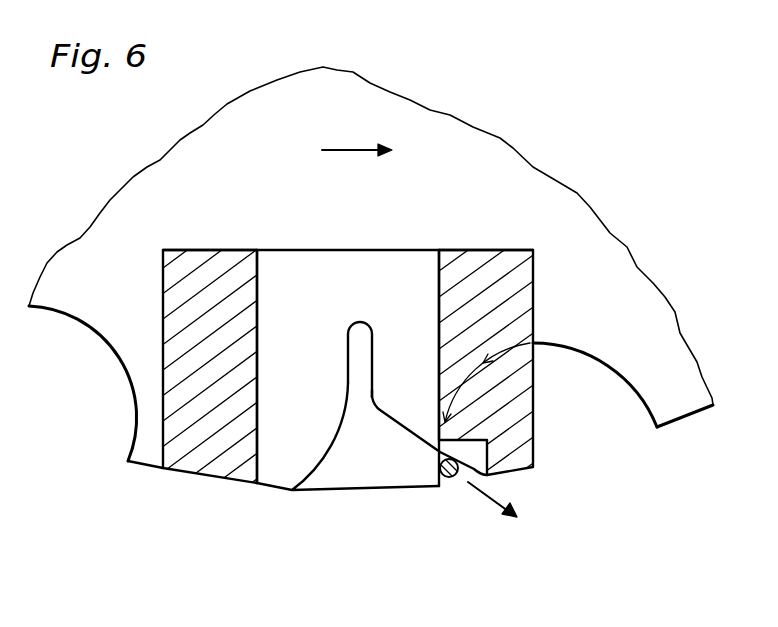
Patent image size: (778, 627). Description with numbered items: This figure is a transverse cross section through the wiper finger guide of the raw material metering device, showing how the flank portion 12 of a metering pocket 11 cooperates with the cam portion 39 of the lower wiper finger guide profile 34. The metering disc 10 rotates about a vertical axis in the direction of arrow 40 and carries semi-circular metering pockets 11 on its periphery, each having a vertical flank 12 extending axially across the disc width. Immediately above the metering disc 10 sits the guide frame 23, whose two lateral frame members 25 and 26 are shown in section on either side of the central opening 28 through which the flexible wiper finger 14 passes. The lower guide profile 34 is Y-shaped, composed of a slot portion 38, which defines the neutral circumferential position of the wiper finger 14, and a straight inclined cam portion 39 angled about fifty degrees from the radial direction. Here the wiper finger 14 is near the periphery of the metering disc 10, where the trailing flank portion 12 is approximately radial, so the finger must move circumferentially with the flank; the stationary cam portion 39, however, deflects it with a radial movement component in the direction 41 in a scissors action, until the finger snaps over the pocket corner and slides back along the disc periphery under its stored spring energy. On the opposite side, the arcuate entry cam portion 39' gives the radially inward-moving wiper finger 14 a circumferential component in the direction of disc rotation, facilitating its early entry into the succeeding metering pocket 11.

The metering disc 10 is at (150, 440).
The metering pocket 11 is at (628, 408).
The flank 12 is at (606, 363).
The wiper finger 14 is at (447, 482).
The guide frame 23 is at (284, 243).
The lateral frame member 25 is at (202, 270).
The lateral frame member 26 is at (487, 267).
The recess 28 is at (408, 270).
The lower guide profile 34 is at (360, 347).
The slot portion 38 is at (372, 387).
The cam portion 39 is at (429, 477).
The entry cam portion 39' is at (348, 480).
The arrow 40 is at (344, 142).
The direction 41 is at (470, 486).